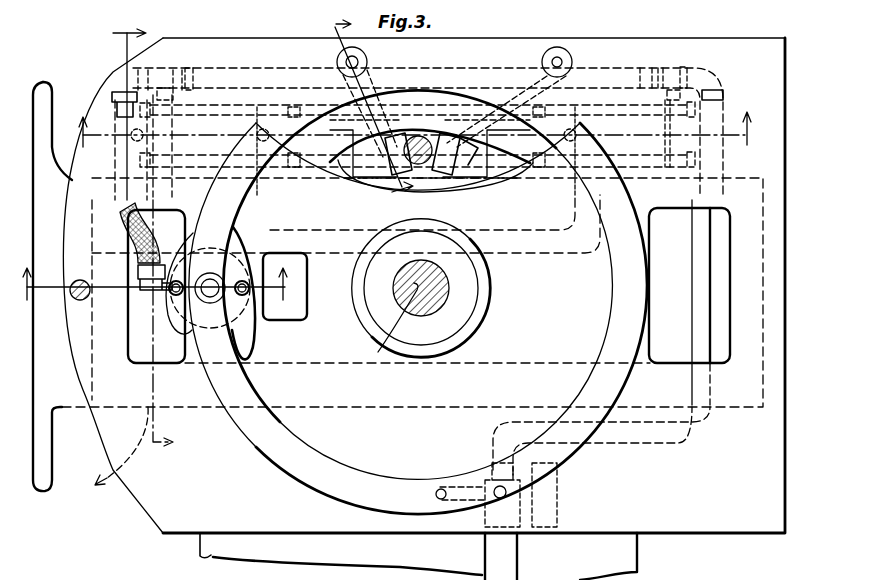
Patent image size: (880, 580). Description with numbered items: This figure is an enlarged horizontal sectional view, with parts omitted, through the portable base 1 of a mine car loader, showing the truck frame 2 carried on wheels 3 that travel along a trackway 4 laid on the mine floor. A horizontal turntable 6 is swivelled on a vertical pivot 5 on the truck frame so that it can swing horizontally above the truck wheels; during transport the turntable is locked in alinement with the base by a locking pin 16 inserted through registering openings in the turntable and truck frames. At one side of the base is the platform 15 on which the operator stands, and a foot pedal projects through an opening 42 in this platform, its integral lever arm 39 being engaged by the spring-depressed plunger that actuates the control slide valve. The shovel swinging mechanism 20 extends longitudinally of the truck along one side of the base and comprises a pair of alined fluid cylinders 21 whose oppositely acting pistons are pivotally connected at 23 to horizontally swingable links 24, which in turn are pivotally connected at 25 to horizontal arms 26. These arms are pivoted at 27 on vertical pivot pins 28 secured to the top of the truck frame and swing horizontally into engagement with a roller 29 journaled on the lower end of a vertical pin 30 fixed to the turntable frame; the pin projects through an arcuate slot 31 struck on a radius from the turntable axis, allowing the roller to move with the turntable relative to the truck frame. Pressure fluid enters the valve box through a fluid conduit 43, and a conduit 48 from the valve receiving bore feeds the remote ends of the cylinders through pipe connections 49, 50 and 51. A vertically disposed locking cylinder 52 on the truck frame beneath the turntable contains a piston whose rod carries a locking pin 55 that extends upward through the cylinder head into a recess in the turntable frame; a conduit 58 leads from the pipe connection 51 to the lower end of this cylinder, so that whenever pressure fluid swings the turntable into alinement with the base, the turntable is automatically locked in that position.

The portable base 1 is at (118, 452).
The truck frame 2 is at (85, 407).
The wheels 3 is at (143, 239).
The trackway 4 is at (413, 130).
The vertical pivot 5 is at (372, 192).
The horizontal turntable 6 is at (159, 273).
The platform 15 is at (208, 557).
The locking pin 16 is at (76, 298).
The shovel swinging mechanism 20 is at (505, 120).
The fluid cylinders 21 is at (227, 120).
The pivotal connection 23 is at (416, 152).
The horizontally swingable links 24 is at (502, 182).
The pivotal connection 25 is at (455, 122).
The horizontal arms 26 is at (452, 100).
The arm pivot 27 is at (555, 58).
The vertical pivot pins 28 is at (347, 60).
The roller 29 is at (398, 175).
The vertical pin 30 is at (440, 178).
The arcuate slot 31 is at (470, 170).
The lever arm 39 is at (482, 523).
The opening 42 is at (518, 549).
The fluid conduit 43 is at (462, 500).
The conduit 48 is at (700, 340).
The pipe connection 49 is at (680, 68).
The pipe connection 50 is at (440, 72).
The pipe connection 51 is at (165, 75).
The locking cylinder 52 is at (156, 286).
The locking pin 55 is at (212, 302).
The conduit 58 is at (110, 223).